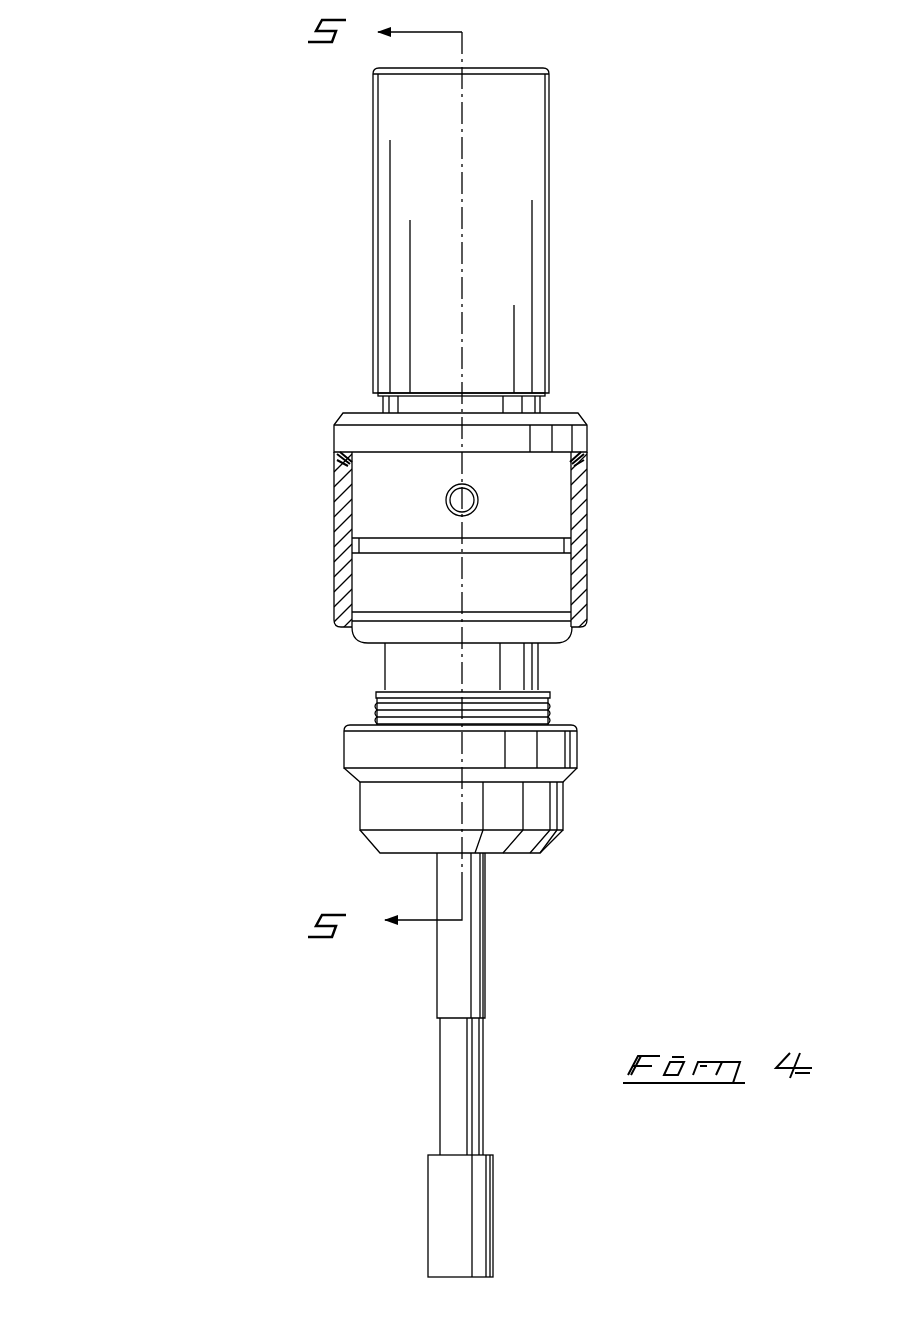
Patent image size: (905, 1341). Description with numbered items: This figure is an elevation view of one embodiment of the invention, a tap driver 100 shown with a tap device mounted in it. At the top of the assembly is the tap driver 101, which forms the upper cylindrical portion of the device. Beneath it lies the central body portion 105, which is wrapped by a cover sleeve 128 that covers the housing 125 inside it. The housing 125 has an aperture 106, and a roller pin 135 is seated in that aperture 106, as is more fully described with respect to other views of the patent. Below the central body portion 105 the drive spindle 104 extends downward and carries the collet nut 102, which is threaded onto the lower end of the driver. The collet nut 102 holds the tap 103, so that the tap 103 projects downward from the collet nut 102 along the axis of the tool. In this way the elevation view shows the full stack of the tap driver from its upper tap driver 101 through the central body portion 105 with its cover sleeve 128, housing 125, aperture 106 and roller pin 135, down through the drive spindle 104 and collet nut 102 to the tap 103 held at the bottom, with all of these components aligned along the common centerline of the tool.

The tap driver 100 is at (117, 105).
The tap driver 101 is at (395, 302).
The collet nut 102 is at (543, 807).
The tap 103 is at (472, 983).
The drive spindle 104 is at (519, 667).
The central body portion 105 is at (503, 501).
The aperture 106 is at (478, 478).
The housing 125 is at (553, 490).
The cover sleeve 128 is at (340, 497).
The roller pin 135 is at (450, 506).